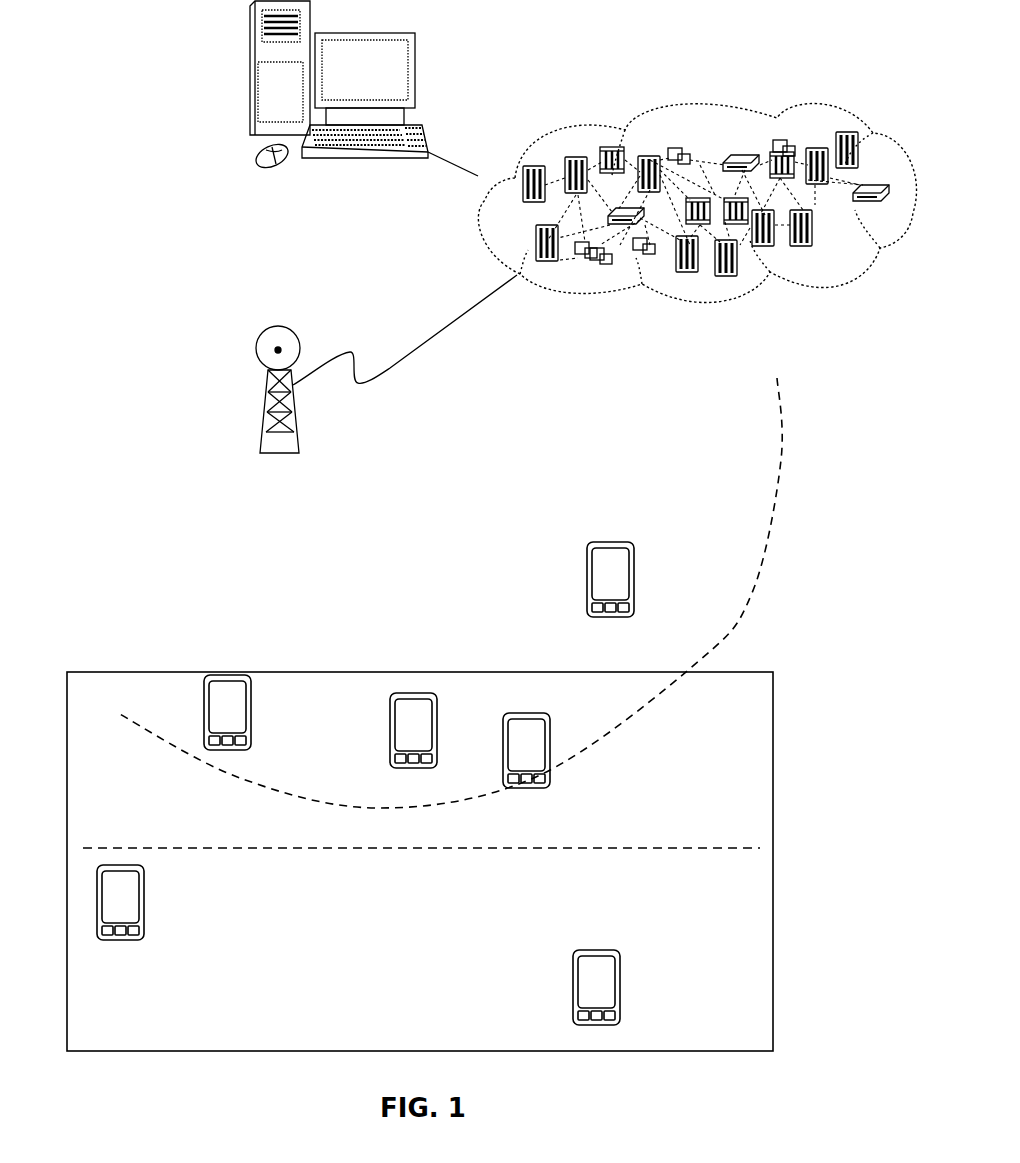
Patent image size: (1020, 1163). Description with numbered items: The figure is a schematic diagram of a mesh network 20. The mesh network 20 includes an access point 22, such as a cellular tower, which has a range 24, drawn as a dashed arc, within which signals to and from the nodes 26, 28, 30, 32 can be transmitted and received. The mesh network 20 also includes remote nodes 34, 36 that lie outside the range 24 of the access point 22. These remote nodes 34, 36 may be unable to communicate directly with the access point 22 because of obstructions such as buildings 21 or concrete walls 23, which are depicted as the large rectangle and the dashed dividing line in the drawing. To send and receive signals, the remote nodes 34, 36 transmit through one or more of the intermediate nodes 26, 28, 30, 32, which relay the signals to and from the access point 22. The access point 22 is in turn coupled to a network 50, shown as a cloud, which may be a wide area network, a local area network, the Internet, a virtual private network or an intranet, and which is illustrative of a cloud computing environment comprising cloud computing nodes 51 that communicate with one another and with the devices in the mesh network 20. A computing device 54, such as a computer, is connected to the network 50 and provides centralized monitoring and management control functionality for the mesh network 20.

The mesh network 20 is at (157, 510).
The buildings 21 is at (205, 1053).
The access point 22 is at (262, 418).
The concrete walls 23 is at (600, 848).
The range 24 is at (778, 525).
The node 26 is at (634, 565).
The node 28 is at (552, 733).
The node 30 is at (390, 731).
The node 32 is at (204, 695).
The remote node 34 is at (622, 996).
The remote node 36 is at (146, 922).
The network 50 is at (697, 197).
The cloud computing nodes 51 is at (800, 250).
The computing device 54 is at (363, 33).